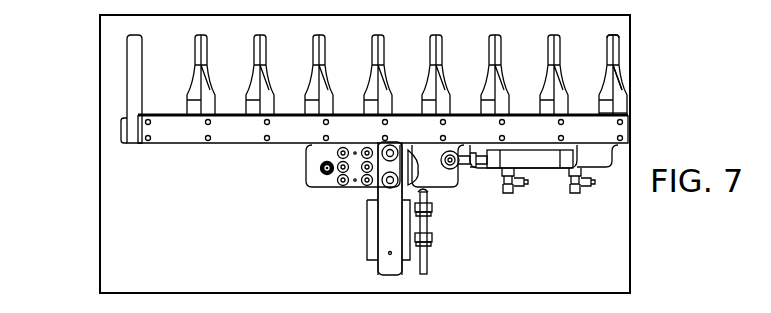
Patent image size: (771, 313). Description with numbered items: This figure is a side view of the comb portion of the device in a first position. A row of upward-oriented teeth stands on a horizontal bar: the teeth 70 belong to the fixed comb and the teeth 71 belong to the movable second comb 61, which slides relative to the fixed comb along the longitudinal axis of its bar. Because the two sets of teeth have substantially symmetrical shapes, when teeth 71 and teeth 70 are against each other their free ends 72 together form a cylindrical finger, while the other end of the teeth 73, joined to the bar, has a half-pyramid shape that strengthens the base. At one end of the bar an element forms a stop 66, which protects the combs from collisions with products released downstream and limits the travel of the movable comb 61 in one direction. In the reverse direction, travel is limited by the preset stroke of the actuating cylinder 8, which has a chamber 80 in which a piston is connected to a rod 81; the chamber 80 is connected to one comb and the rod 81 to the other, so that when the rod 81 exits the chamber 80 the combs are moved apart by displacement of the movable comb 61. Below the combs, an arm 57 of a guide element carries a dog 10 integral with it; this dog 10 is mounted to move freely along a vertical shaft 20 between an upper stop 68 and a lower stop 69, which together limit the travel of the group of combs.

The actuating cylinder 8 is at (537, 180).
The dog 10 is at (416, 233).
The vertical shaft 20 is at (428, 268).
The arm 57 is at (392, 208).
The second comb 61 is at (172, 140).
The stop 66 is at (127, 58).
The upper stop 68 is at (432, 209).
The lower stop 69 is at (432, 238).
The teeth 70 is at (604, 86).
The teeth 71 is at (618, 91).
The free ends 72 is at (623, 33).
The other end of the teeth 73 is at (623, 110).
The chamber 80 is at (548, 162).
The rod 81 is at (467, 156).